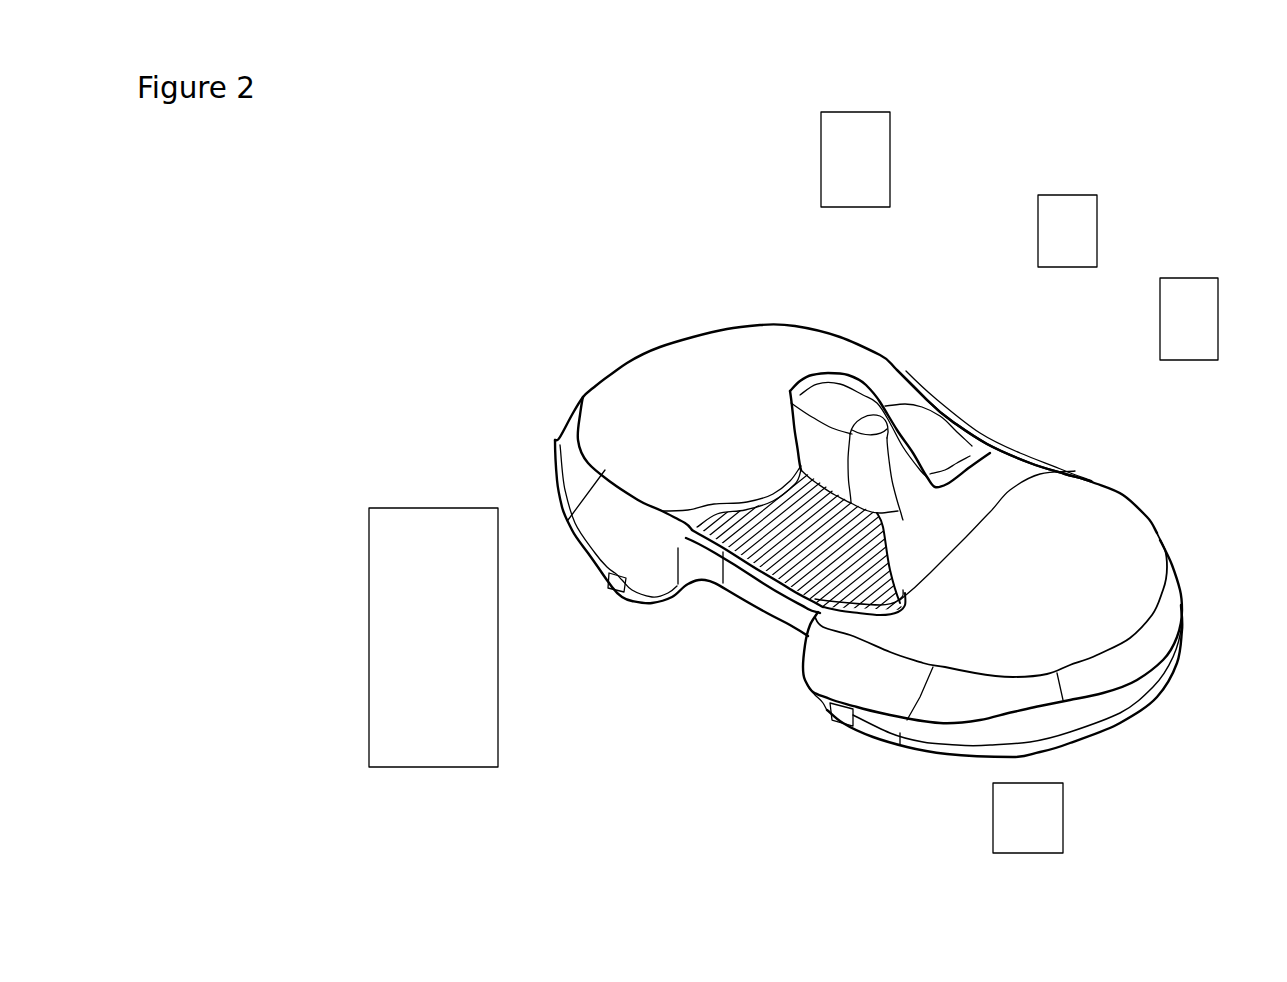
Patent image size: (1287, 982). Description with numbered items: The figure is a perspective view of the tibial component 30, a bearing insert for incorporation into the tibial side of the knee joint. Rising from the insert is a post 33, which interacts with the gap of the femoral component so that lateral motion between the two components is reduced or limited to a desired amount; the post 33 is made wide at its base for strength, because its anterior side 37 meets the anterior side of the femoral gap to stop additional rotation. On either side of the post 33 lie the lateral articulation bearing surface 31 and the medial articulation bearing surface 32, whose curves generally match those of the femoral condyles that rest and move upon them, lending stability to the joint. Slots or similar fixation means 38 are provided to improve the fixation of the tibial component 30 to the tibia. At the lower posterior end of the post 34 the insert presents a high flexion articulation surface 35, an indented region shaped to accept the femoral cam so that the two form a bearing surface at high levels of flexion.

The tibial component 30 is at (575, 388).
The lateral articulation bearing surface 31 is at (725, 384).
The medial articulation bearing surface 32 is at (1060, 573).
The post 33 is at (825, 452).
The lower posterior end of the post 34 is at (877, 552).
The high flexion articulation surface 35 is at (823, 550).
The anterior side of the post 37 is at (953, 430).
The fixation means 38 is at (830, 722).